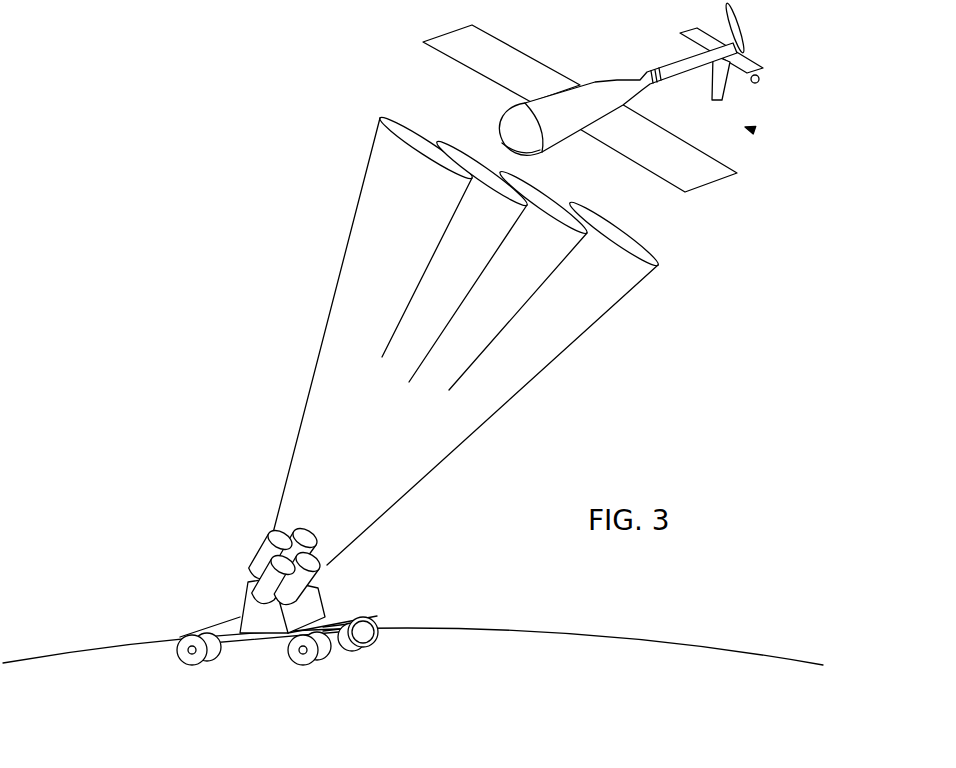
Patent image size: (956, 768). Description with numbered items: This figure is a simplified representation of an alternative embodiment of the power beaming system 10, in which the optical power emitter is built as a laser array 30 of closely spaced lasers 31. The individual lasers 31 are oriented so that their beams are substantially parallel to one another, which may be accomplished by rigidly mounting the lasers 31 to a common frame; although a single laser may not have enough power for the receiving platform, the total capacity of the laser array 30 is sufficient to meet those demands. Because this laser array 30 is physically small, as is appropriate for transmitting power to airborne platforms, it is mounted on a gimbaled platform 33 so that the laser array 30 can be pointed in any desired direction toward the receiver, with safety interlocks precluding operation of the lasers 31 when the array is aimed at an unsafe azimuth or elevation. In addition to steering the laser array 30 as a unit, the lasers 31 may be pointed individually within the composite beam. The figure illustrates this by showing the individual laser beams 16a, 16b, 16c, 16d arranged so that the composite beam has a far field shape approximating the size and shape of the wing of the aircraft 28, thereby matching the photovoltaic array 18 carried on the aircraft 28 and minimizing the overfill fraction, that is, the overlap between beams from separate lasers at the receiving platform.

The power beaming system 10 is at (110, 306).
The laser beam 16a is at (380, 117).
The laser beam 16b is at (462, 145).
The laser beam 16c is at (588, 217).
The laser beam 16d is at (658, 267).
The photovoltaic array 18 is at (510, 42).
The aircraft 28 is at (753, 130).
The laser array 30 is at (285, 564).
The lasers 31 is at (260, 540).
The gimbaled platform 33 is at (245, 607).